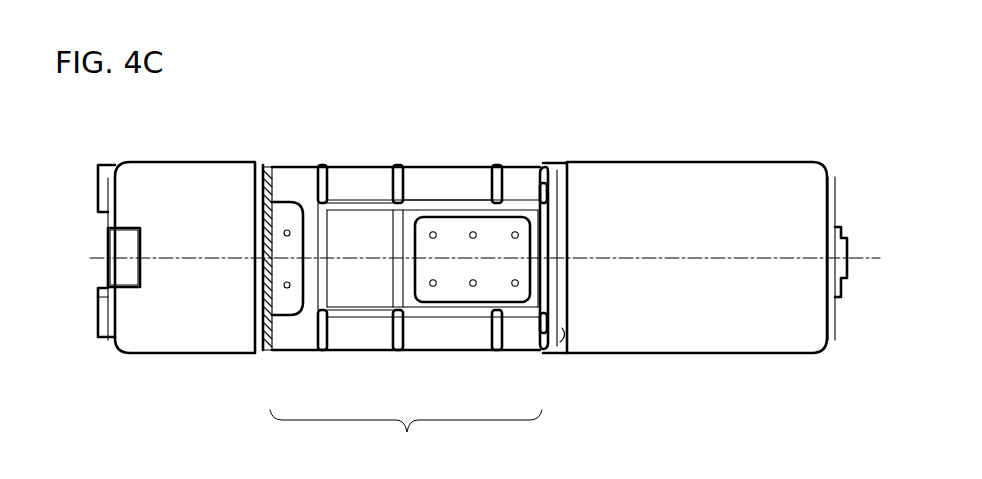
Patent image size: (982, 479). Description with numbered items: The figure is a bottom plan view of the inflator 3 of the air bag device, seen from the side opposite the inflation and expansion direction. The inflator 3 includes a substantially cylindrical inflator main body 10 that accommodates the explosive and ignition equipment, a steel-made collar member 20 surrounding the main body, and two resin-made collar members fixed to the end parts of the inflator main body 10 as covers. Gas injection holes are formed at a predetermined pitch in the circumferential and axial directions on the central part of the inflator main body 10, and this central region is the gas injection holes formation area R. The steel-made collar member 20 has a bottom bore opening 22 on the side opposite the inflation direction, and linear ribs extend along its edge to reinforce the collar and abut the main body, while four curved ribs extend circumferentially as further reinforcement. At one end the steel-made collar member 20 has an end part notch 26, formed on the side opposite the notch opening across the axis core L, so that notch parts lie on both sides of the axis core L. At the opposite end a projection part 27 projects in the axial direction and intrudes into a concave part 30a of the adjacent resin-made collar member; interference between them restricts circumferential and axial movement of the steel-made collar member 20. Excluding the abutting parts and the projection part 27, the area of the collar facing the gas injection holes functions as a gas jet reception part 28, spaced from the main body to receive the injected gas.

The inflator 3 is at (830, 134).
The inflator main body 10 is at (277, 297).
The steel-made collar member 20 is at (533, 164).
The bottom bore opening 22 is at (457, 295).
The end part notch 26 is at (302, 210).
The projection part 27 is at (556, 205).
The gas jet reception part 28 is at (466, 180).
The concave part 30a is at (560, 340).
The axis core L is at (870, 258).
The gas injection holes formation area R is at (406, 436).